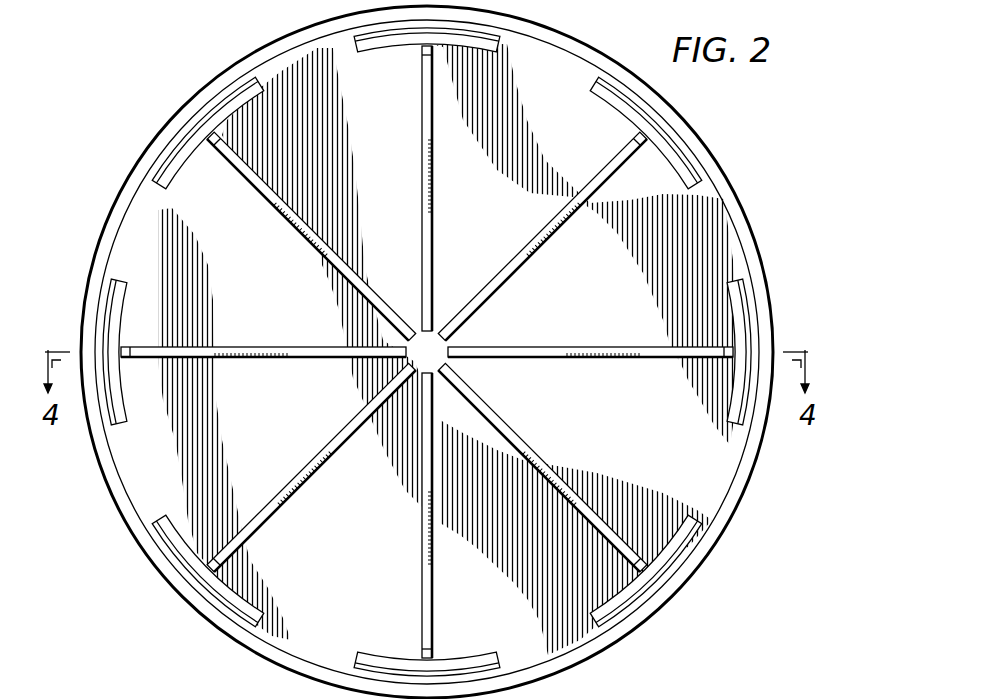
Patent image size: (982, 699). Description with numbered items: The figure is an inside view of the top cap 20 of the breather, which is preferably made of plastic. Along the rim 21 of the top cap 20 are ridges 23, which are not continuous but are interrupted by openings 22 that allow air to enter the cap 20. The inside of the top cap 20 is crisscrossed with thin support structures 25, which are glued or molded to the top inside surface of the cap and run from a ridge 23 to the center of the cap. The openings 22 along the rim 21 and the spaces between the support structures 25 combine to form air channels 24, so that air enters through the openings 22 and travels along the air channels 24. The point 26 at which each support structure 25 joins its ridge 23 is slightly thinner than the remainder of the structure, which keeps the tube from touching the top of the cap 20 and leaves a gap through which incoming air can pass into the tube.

The top cap 20 is at (113, 154).
The rim 21 is at (102, 246).
The openings 22 is at (302, 78).
The ridges 23 is at (688, 160).
The air channels 24 is at (660, 450).
The support structures 25 is at (505, 275).
The point 26 is at (433, 665).